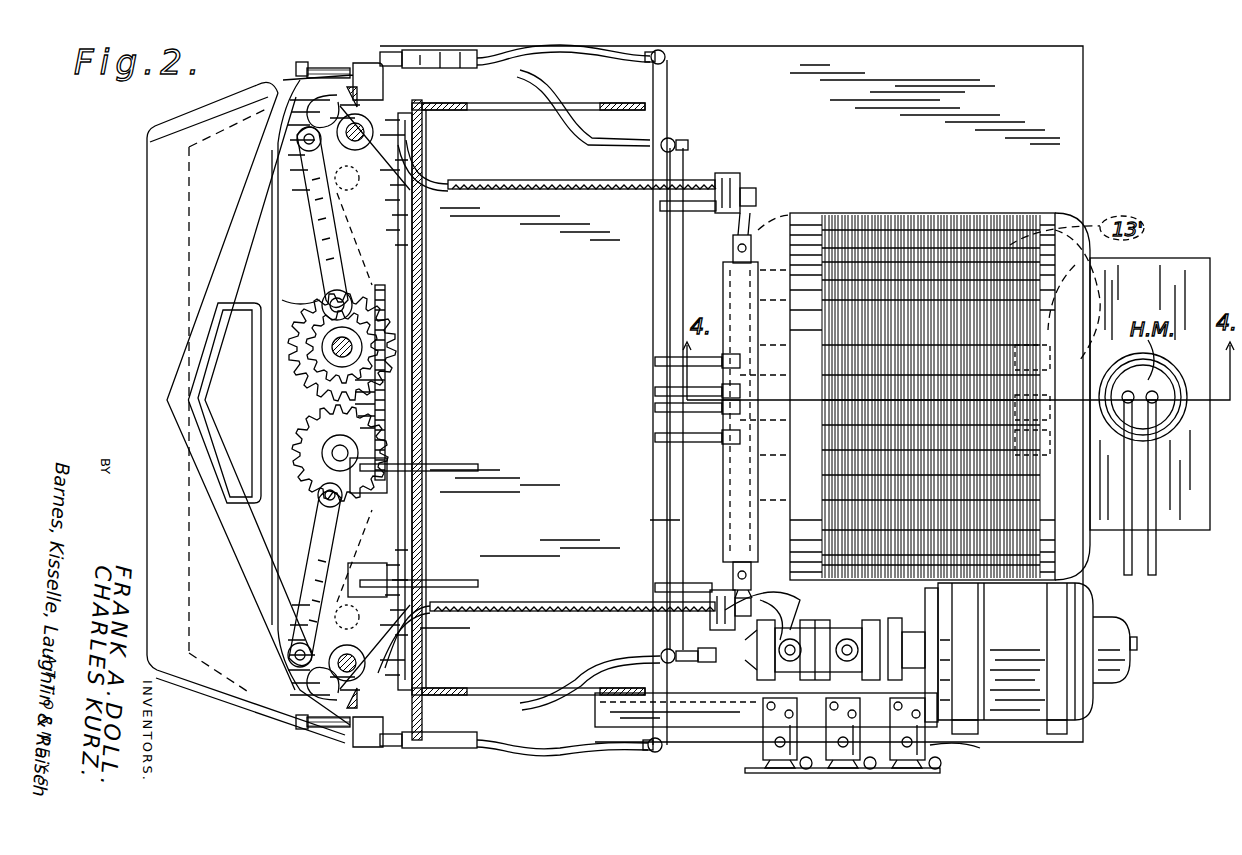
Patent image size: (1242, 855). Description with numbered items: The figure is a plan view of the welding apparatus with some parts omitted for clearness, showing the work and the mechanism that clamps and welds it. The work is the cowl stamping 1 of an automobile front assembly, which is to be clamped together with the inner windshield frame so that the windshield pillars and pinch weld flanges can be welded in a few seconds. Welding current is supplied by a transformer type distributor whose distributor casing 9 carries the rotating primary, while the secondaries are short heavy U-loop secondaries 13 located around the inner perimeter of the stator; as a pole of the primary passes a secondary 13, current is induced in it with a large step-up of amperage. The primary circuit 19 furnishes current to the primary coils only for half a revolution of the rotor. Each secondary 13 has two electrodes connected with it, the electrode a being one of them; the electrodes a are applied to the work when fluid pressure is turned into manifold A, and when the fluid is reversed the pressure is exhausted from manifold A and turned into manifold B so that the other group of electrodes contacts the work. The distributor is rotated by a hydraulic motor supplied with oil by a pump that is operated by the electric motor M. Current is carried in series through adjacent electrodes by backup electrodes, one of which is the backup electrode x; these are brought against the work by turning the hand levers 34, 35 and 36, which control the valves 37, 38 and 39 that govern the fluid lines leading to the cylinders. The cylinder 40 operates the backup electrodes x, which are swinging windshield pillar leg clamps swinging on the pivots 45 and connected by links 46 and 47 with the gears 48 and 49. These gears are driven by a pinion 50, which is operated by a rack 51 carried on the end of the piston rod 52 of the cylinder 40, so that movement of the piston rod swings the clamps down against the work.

The cowl stamping 1 is at (270, 123).
The distributor casing 9 is at (1060, 568).
The U-loop secondary 13 is at (745, 240).
The primary circuit 19 is at (722, 440).
The hand lever 34 is at (806, 768).
The hand lever 35 is at (870, 768).
The hand lever 36 is at (935, 768).
The valve 37 is at (772, 732).
The valve 38 is at (780, 700).
The valve 39 is at (925, 748).
The cylinder 40 is at (405, 546).
The pivot 45 is at (412, 147).
The link 46 is at (315, 205).
The link 47 is at (315, 545).
The gear 48 is at (290, 302).
The gear 49 is at (308, 495).
The pinion 50 is at (380, 333).
The rack 51 is at (380, 300).
The piston rod 52 is at (385, 420).
The manifold A is at (668, 100).
The manifold B is at (686, 152).
The electric motor M is at (1031, 658).
The electrode a is at (318, 68).
The backup electrode x is at (330, 68).